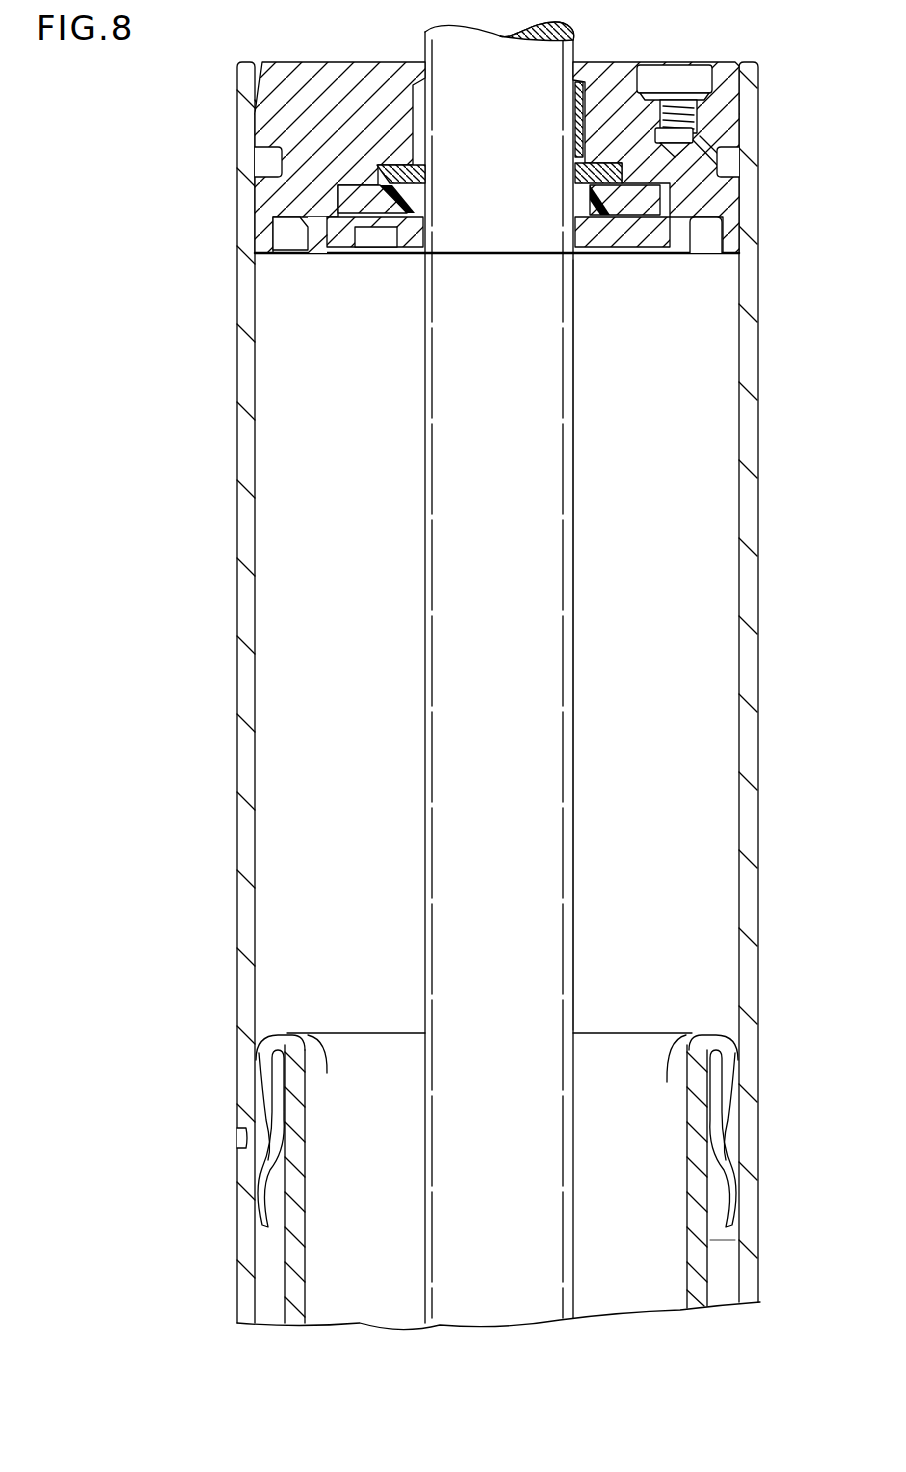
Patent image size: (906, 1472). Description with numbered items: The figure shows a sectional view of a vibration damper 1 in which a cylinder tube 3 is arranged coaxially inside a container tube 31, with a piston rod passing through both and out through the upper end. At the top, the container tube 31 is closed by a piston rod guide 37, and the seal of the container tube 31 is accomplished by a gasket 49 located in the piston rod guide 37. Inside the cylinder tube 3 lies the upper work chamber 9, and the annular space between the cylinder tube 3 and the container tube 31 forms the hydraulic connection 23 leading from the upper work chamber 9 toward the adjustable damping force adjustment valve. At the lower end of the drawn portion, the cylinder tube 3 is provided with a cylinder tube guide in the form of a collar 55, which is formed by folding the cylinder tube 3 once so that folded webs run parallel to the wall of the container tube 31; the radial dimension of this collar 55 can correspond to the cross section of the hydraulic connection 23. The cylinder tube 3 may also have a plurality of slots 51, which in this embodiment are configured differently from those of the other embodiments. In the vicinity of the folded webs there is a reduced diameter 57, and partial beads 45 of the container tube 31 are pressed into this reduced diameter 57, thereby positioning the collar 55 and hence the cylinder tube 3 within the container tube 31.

The vibration damper 1 is at (192, 644).
The cylinder tube 3 is at (700, 1278).
The upper work chamber 9 is at (698, 425).
The hydraulic connection 23 is at (723, 1248).
The container tube 31 is at (237, 420).
The piston rod guide 37 is at (318, 185).
The partial beads 45 is at (226, 1144).
The gasket 49 is at (266, 160).
The slots 51 is at (270, 1070).
The collar 55 is at (725, 1000).
The reduced diameter 57 is at (735, 1140).